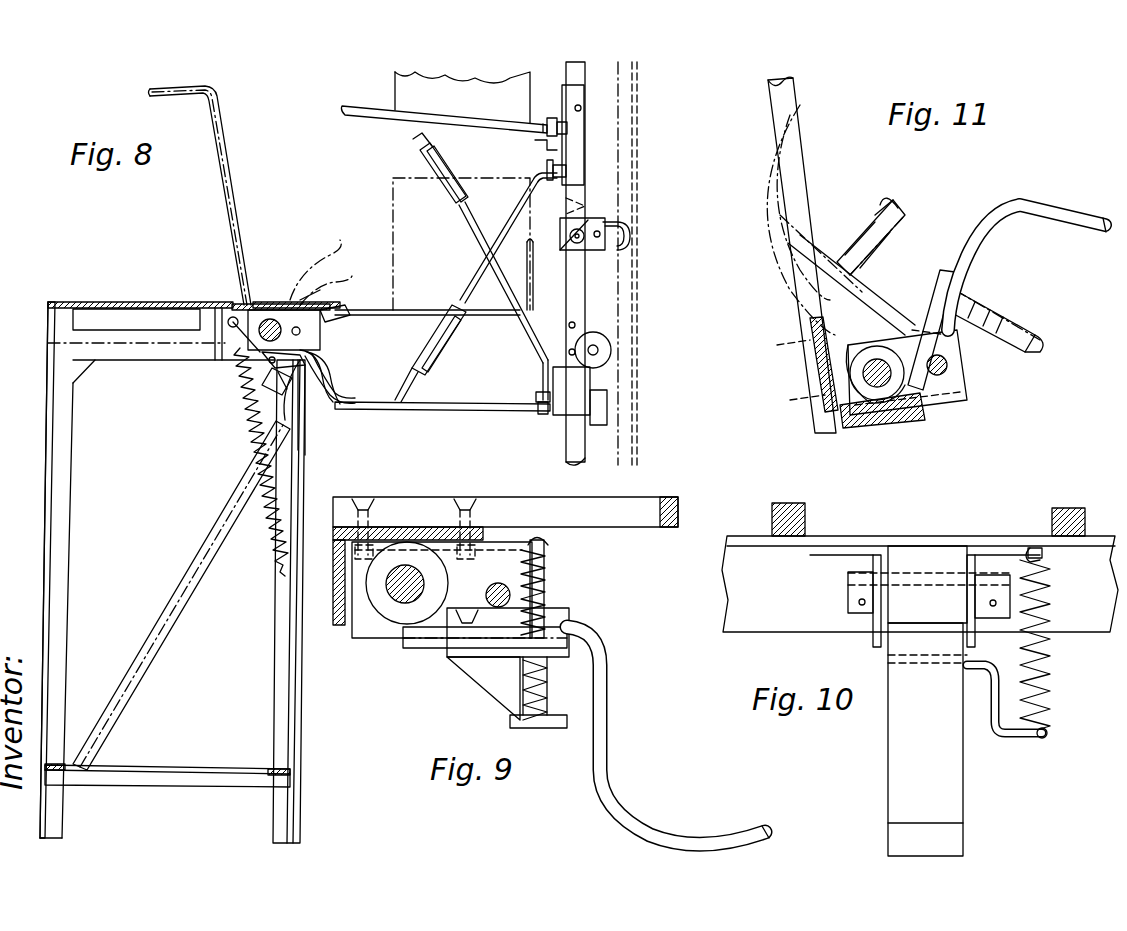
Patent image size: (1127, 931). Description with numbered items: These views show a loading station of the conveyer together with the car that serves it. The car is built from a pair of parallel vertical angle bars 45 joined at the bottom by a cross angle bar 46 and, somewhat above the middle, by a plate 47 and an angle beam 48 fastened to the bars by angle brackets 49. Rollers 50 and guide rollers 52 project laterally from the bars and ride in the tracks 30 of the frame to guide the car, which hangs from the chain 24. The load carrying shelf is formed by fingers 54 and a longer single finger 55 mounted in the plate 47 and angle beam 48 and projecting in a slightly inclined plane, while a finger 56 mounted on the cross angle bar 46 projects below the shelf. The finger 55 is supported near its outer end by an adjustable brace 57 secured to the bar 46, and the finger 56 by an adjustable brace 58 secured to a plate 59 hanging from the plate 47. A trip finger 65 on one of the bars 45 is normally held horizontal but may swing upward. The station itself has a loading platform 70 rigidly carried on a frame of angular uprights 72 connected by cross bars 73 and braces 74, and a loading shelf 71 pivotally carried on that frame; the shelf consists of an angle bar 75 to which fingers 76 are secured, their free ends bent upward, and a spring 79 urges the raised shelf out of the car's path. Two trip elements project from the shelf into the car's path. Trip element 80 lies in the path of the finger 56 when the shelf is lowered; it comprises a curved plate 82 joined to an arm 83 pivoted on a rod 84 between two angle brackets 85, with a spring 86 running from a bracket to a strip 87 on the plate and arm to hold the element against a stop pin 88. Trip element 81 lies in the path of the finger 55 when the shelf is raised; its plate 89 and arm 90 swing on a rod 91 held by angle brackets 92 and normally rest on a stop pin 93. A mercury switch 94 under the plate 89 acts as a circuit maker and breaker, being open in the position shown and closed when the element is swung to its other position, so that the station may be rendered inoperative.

In FIG. 8, the chain 24 is at (622, 117).
In FIG. 8, the tracks 30 is at (636, 92).
In FIG. 8, the vertical angle bars 45 is at (578, 160).
In FIG. 8, the cross angle bar 46 is at (548, 414).
In FIG. 8, the plate 47 is at (553, 170).
In FIG. 8, the angle beam 48 is at (535, 148).
In FIG. 8, the angle brackets 49 is at (572, 100).
In FIG. 8, the rollers 50 is at (607, 400).
In FIG. 8, the guide rollers 52 is at (606, 338).
In FIG. 8, the fingers 54 is at (455, 121).
In FIG. 8, the single finger 55 is at (355, 106).
In FIG. 8, the finger 56 is at (487, 402).
In FIG. 8, the brace 57 is at (472, 237).
In FIG. 8, the brace 58 is at (476, 284).
In FIG. 8, the plate 59 is at (600, 183).
In FIG. 8, the trip finger 65 is at (605, 230).
In FIG. 8, the loading platform 70 is at (117, 302).
In FIG. 8, the loading shelf 71 is at (370, 303).
In FIG. 8, the angular uprights 72 is at (66, 559).
In FIG. 8, the cross bars 73 is at (142, 775).
In FIG. 8, the braces 74 is at (240, 485).
In FIG. 9, the angle bar 75 is at (337, 628).
In FIG. 10, the angle bar 75 is at (924, 539).
In FIG. 11, the angle bar 75 is at (853, 430).
In FIG. 9, the fingers 76 is at (505, 528).
In FIG. 10, the fingers 76 is at (807, 514).
In FIG. 11, the fingers 76 is at (807, 321).
In FIG. 8, the spring 79 is at (247, 405).
In FIG. 8, the trip element 80 is at (345, 398).
In FIG. 9, the trip element 80 is at (655, 808).
In FIG. 10, the trip element 80 is at (885, 766).
In FIG. 8, the trip element 81 is at (320, 405).
In FIG. 11, the trip element 81 is at (1068, 204).
In FIG. 9, the curved plate 82 is at (613, 740).
In FIG. 10, the curved plate 82 is at (927, 739).
In FIG. 9, the arm 83 is at (407, 583).
In FIG. 10, the arm 83 is at (950, 560).
In FIG. 9, the rod 84 is at (421, 588).
In FIG. 10, the rod 84 is at (850, 579).
In FIG. 9, the angle brackets 85 is at (374, 628).
In FIG. 10, the angle brackets 85 is at (868, 598).
In FIG. 9, the spring 86 is at (548, 564).
In FIG. 10, the spring 86 is at (1050, 677).
In FIG. 9, the strip 87 is at (508, 668).
In FIG. 10, the strip 87 is at (1000, 740).
In FIG. 9, the stop pin 88 is at (510, 595).
In FIG. 10, the stop pin 88 is at (905, 603).
In FIG. 11, the plate 89 is at (973, 252).
In FIG. 11, the arm 90 is at (919, 310).
In FIG. 8, the rod 91 is at (270, 318).
In FIG. 11, the rod 91 is at (862, 373).
In FIG. 11, the angle brackets 92 is at (967, 400).
In FIG. 8, the stop pin 93 is at (262, 370).
In FIG. 11, the stop pin 93 is at (950, 366).
In FIG. 11, the mercury switch 94 is at (1041, 336).